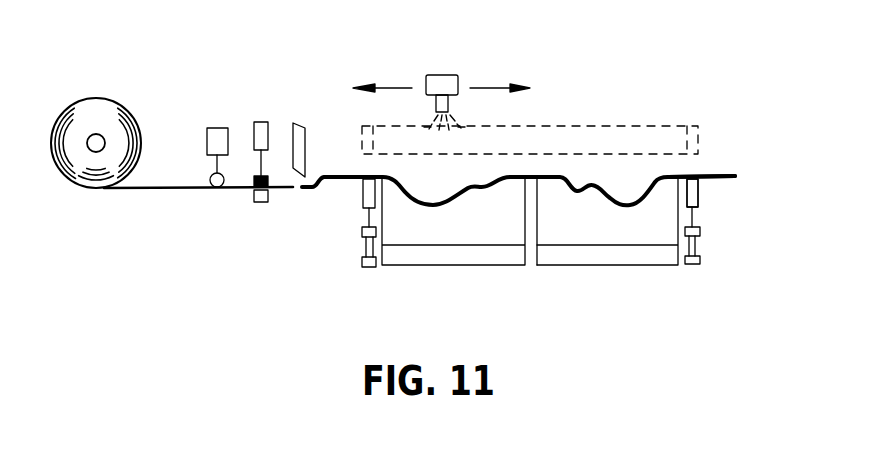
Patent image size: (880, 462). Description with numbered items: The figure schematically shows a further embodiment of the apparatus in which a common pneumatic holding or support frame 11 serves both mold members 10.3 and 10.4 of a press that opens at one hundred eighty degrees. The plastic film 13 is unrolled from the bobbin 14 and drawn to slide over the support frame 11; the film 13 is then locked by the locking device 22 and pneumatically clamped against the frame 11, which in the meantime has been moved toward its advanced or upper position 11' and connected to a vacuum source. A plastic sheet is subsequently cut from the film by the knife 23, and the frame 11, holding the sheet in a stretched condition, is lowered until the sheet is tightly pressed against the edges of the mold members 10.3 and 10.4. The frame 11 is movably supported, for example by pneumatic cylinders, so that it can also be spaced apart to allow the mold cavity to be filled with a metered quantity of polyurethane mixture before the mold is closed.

The bobbin 14 is at (100, 114).
The plastic film 13 is at (163, 187).
The locking device 22 is at (257, 180).
The knife 23 is at (297, 133).
The advanced or upper position of the frame 11' is at (557, 118).
The mold member 10.3 is at (418, 228).
The mold member 10.4 is at (642, 223).
The pneumatic holding or support frame 11 is at (725, 198).